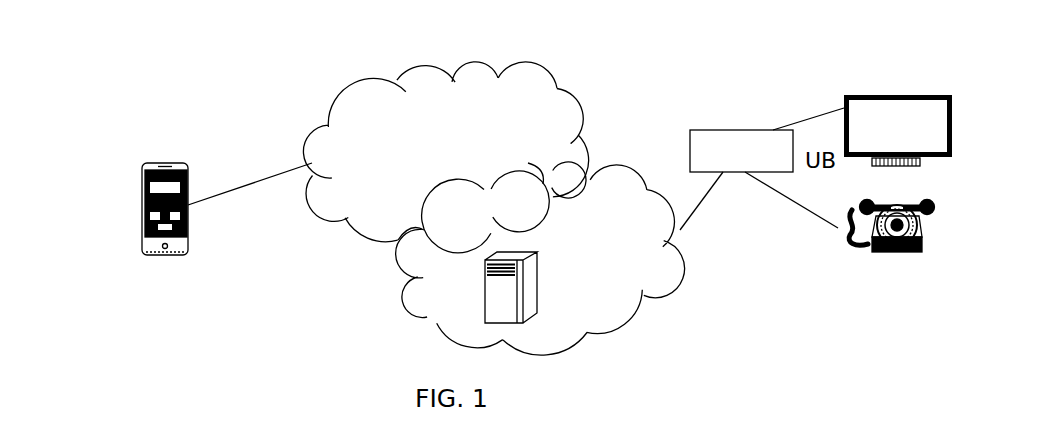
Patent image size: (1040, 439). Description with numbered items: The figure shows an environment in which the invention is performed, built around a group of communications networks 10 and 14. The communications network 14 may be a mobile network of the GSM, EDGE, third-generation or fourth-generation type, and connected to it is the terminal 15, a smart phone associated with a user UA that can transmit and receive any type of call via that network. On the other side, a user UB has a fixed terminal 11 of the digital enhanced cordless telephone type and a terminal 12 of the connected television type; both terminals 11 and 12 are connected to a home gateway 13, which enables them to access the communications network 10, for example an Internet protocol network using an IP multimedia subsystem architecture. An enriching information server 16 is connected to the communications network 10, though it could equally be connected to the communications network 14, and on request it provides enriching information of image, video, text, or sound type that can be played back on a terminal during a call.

The communications network 10 is at (570, 360).
The fixed terminal 11 is at (942, 226).
The terminal 12 is at (955, 133).
The home gateway 13 is at (700, 129).
The communications network 14 is at (398, 76).
The terminal 15 is at (140, 192).
The enriching information server 16 is at (538, 278).